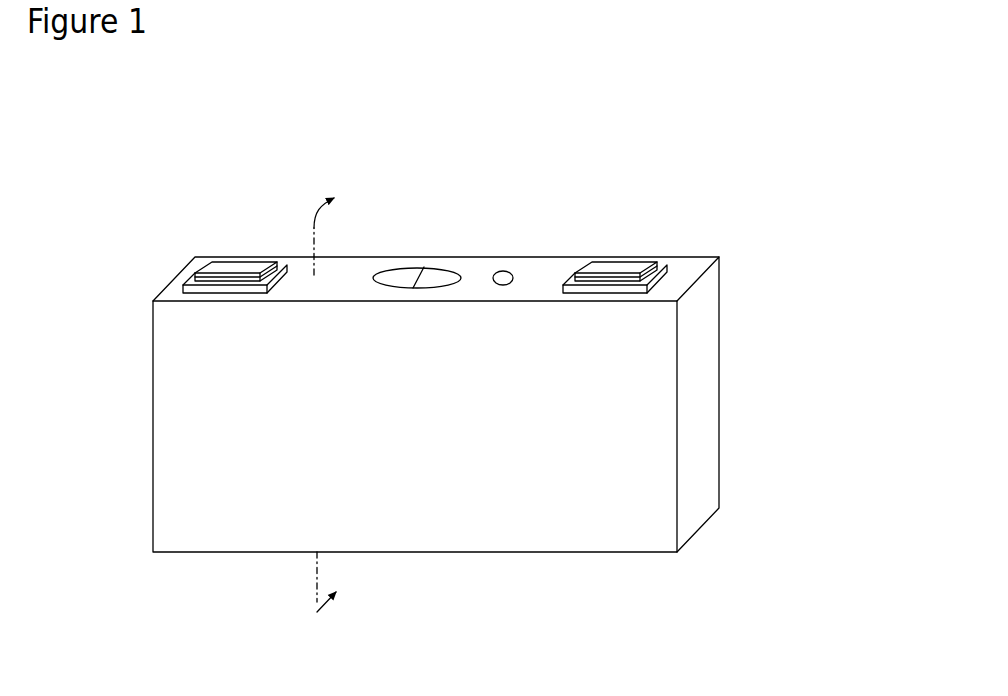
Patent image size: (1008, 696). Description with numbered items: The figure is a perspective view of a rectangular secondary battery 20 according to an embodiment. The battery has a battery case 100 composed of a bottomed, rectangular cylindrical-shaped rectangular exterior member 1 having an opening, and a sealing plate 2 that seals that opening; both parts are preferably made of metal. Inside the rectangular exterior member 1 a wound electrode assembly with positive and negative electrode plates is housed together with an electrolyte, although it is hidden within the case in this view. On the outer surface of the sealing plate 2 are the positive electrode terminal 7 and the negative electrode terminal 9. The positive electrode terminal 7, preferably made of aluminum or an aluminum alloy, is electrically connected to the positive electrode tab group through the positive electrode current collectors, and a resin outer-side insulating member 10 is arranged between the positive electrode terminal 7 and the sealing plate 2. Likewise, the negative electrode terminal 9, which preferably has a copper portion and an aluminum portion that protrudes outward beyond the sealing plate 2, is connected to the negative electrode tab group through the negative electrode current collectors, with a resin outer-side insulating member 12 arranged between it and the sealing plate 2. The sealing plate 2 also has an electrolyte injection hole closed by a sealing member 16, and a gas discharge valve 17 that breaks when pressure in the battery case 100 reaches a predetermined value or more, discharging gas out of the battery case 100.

The rectangular secondary battery 20 is at (150, 126).
The battery case 100 is at (802, 167).
The rectangular exterior member 1 is at (707, 337).
The sealing plate 2 is at (683, 268).
The positive electrode terminal 7 is at (630, 268).
The negative electrode terminal 9 is at (245, 272).
The outer-side insulating member 10 is at (572, 277).
The outer-side insulating member 12 is at (203, 268).
The sealing member 16 is at (507, 275).
The gas discharge valve 17 is at (432, 275).